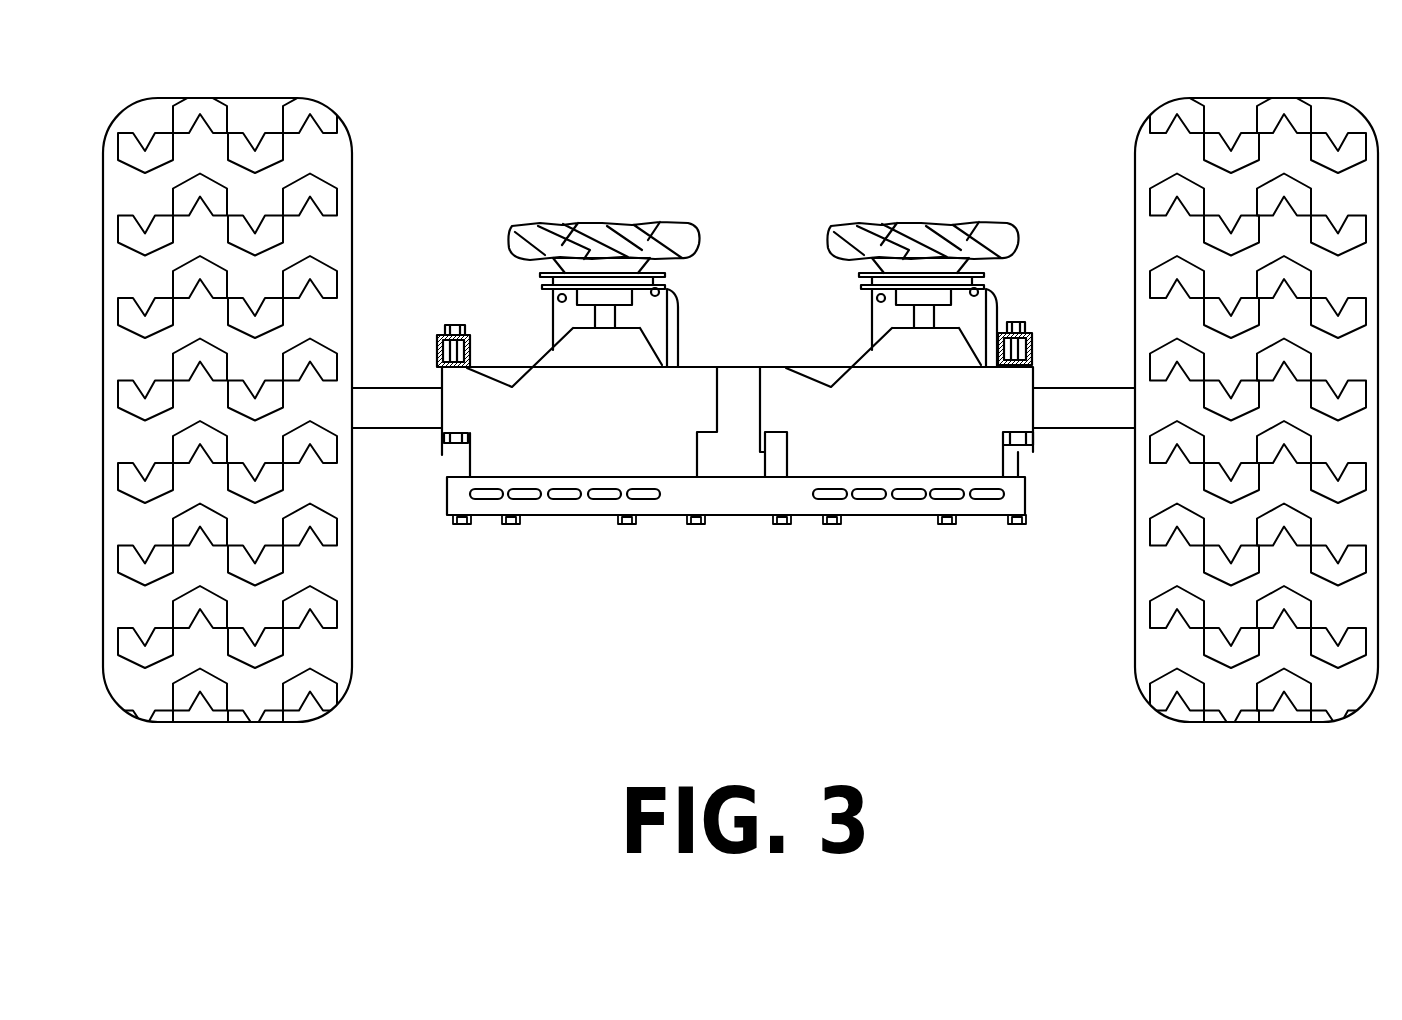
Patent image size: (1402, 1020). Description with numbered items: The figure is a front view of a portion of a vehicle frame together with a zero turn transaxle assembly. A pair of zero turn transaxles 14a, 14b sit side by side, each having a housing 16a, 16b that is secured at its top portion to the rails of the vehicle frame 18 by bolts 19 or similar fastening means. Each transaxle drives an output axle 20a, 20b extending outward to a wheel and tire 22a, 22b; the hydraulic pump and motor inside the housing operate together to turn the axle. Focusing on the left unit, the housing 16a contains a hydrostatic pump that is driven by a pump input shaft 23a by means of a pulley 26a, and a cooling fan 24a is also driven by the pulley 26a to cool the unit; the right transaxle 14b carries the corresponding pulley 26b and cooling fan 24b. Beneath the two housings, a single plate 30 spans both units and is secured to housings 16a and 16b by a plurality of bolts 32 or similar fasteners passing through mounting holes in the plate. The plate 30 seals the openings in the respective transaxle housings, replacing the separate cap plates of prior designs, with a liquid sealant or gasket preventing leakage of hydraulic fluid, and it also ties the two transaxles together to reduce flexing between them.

The zero turn transaxle 14a is at (612, 208).
The zero turn transaxle 14b is at (955, 207).
The transaxle housing 16a is at (627, 434).
The transaxle housing 16b is at (943, 425).
The vehicle frame 18 is at (1032, 347).
The bolt 19 is at (1027, 325).
The axle 20a is at (392, 430).
The axle 20b is at (1086, 430).
The wheel and tire 22a is at (333, 657).
The wheel and tire 22b is at (1153, 650).
The pump input shaft 23a is at (622, 315).
The cooling fan 24a is at (553, 222).
The cooling fan 24b is at (958, 228).
The pulley 26a is at (665, 283).
The pulley 26b is at (987, 283).
The plate 30 is at (738, 497).
The bolt 32 is at (852, 597).